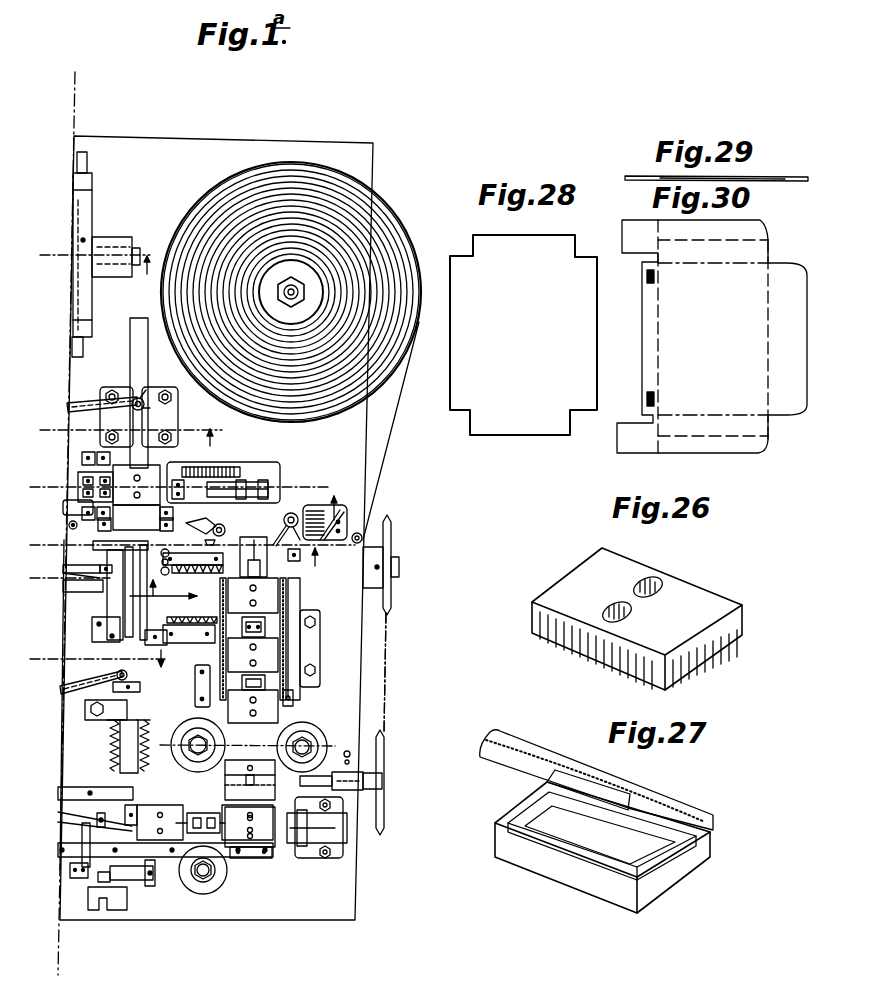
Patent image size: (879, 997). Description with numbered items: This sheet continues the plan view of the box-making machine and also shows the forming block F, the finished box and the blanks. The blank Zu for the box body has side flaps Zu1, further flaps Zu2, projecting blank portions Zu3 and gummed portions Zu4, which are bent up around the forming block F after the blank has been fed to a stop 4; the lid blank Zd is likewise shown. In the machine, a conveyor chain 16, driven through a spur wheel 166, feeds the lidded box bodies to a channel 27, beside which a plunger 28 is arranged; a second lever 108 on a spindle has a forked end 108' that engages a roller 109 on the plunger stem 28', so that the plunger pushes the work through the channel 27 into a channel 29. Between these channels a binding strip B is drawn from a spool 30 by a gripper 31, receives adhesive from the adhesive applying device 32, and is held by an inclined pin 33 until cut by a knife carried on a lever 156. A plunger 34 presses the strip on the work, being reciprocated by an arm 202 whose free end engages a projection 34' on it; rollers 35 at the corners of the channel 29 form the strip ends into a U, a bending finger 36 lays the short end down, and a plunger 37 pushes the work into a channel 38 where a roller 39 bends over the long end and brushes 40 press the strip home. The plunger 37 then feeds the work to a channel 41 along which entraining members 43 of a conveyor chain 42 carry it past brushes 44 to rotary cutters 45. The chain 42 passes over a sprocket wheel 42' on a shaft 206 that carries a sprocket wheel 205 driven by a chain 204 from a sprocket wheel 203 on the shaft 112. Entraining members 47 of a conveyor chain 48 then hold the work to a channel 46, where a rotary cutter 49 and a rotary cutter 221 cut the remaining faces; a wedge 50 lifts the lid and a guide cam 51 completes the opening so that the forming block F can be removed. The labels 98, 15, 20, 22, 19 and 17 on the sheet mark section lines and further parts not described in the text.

In FIG. 1A, the spool 30 is at (419, 322).
In FIG. 1A, the binding strip B is at (401, 403).
In FIG. 1A, the slide block 98 is at (117, 237).
In FIG. 1A, the stop 4 is at (152, 263).
In FIG. 1A, the plunger stem 28' is at (119, 393).
In FIG. 1A, the second lever 108 is at (86, 392).
In FIG. 1A, the forked end 108' is at (154, 381).
In FIG. 1A, the roller 109 is at (150, 408).
In FIG. 1A, the plunger 28 is at (150, 421).
In FIG. 1A, the conveyor chain 16 is at (220, 435).
In FIG. 1A, the spur wheel 166 is at (232, 455).
In FIG. 1A, the rollers 35 is at (132, 598).
In FIG. 1A, the channel 27 is at (205, 520).
In FIG. 1A, the lever 156 is at (223, 523).
In FIG. 1A, the pin 33 is at (280, 532).
In FIG. 1A, the adhesive applying device 32 is at (320, 505).
In FIG. 1A, the direction arrow 15 is at (344, 501).
In FIG. 1A, the direction arrow 20 is at (328, 556).
In FIG. 1A, the sprocket wheel 203 is at (393, 535).
In FIG. 1A, the shaft 112 is at (400, 574).
In FIG. 1A, the chain 204 is at (387, 663).
In FIG. 1A, the sprocket wheel 205 is at (387, 757).
In FIG. 1A, the shaft 206 is at (387, 782).
In FIG. 1A, the roller axis 22 is at (344, 752).
In FIG. 1A, the conveyor chain 42 is at (276, 639).
In FIG. 1A, the channel 41 is at (268, 630).
In FIG. 1A, the brushes 44 is at (285, 657).
In FIG. 1A, the entraining members 43 is at (301, 697).
In FIG. 1A, the rotary cutters 45 is at (307, 722).
In FIG. 1A, the channel 38 is at (217, 583).
In FIG. 1A, the brushes 40 is at (197, 573).
In FIG. 1A, the direction arrow 19 is at (163, 587).
In FIG. 1A, the direction arrow 17 is at (172, 658).
In FIG. 1A, the roller 39 is at (120, 591).
In FIG. 1A, the plunger 37 is at (70, 590).
In FIG. 1A, the bending finger 36 is at (98, 572).
In FIG. 1A, the channel 29 is at (103, 603).
In FIG. 1A, the gripper 31 is at (65, 537).
In FIG. 1A, the arm 202 is at (62, 685).
In FIG. 1A, the projection 34' is at (100, 698).
In FIG. 1A, the plunger 34 is at (114, 746).
In FIG. 1A, the rotary cutter 49 is at (187, 733).
In FIG. 1A, the conveyor chain 48 is at (195, 802).
In FIG. 1A, the sprocket wheel 42' is at (231, 780).
In FIG. 1A, the entraining members 47 is at (103, 817).
In FIG. 1A, the channel 46 is at (123, 810).
In FIG. 1A, the guide cam 51 is at (60, 825).
In FIG. 1A, the wedge 50 is at (192, 880).
In FIG. 1A, the rotary cutter 221 is at (207, 895).
In FIG. 28, the blank Zd is at (498, 436).
In FIG. 30, the blank Zu is at (672, 327).
In FIG. 30, the side flaps Zu1 is at (627, 225).
In FIG. 30, the flaps Zu2 is at (768, 232).
In FIG. 30, the blank portions Zu3 is at (797, 270).
In FIG. 30, the gummed portions Zu4 is at (645, 280).
In FIG. 26, the forming block F is at (687, 578).